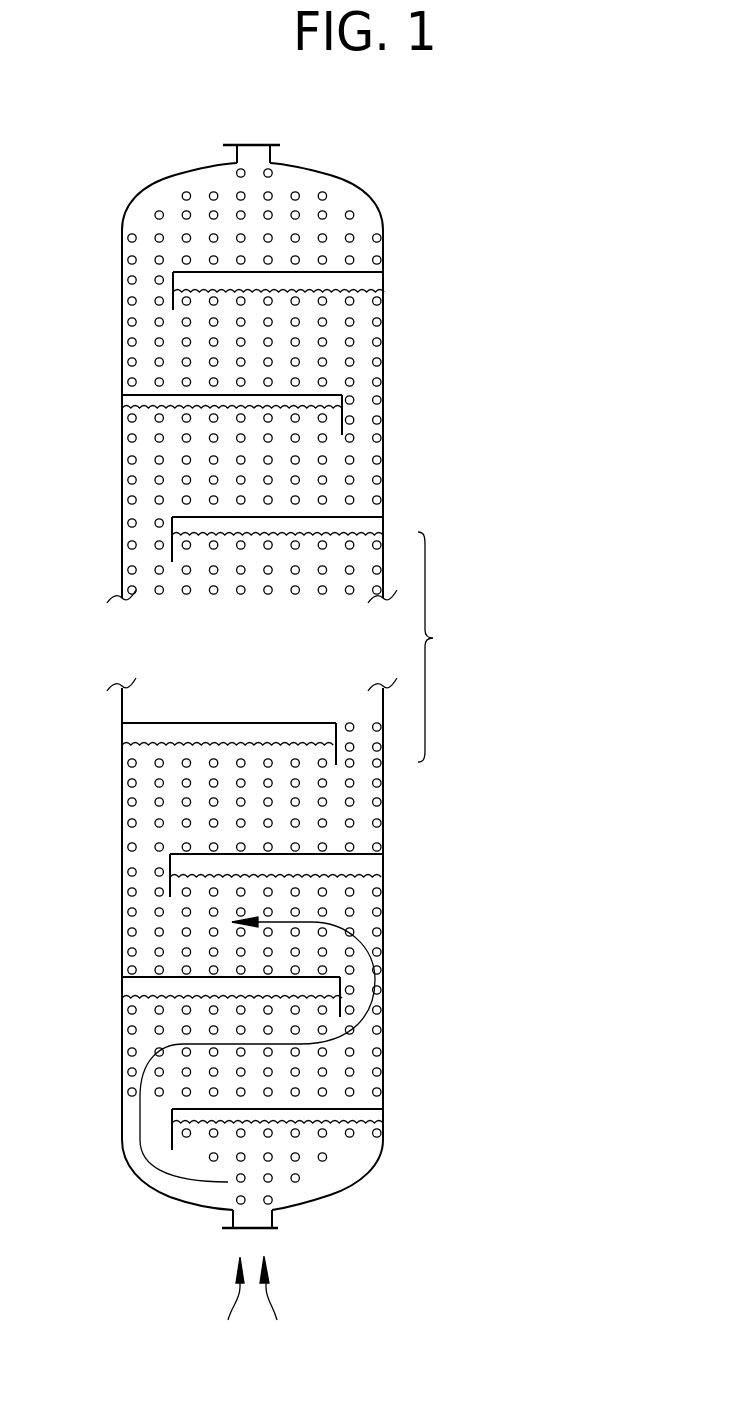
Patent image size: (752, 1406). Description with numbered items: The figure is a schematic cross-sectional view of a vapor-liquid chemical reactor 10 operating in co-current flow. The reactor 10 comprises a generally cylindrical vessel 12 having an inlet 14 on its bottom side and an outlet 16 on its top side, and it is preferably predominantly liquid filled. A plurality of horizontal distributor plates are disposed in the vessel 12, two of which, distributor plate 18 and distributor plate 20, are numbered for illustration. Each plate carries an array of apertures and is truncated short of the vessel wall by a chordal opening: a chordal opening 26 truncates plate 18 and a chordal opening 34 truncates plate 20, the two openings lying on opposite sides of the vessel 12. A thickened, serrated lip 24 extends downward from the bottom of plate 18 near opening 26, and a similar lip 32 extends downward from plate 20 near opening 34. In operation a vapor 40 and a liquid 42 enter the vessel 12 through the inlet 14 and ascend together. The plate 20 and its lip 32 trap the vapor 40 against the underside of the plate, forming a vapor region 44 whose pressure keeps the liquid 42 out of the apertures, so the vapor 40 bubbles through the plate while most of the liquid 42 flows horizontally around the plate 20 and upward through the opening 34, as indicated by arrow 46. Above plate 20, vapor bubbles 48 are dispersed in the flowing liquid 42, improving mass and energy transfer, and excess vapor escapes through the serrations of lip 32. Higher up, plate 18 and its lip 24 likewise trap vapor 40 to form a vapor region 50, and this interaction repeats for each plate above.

The vapor-liquid chemical reactor 10 is at (500, 372).
The vessel 12 is at (383, 477).
The inlet 14 is at (253, 1230).
The outlet 16 is at (256, 144).
The distributor plate 18 is at (255, 975).
The distributor plate 20 is at (274, 1129).
The lip 24 is at (343, 1005).
The chordal opening 26 is at (365, 983).
The lip 32 is at (172, 1142).
The chordal opening 34 is at (162, 1120).
The vapor 40 is at (228, 1304).
The liquid 42 is at (277, 1304).
The vapor region 44 is at (370, 1116).
The arrow 46 is at (347, 935).
The vapor bubbles 48 is at (207, 1030).
The vapor region 50 is at (152, 985).